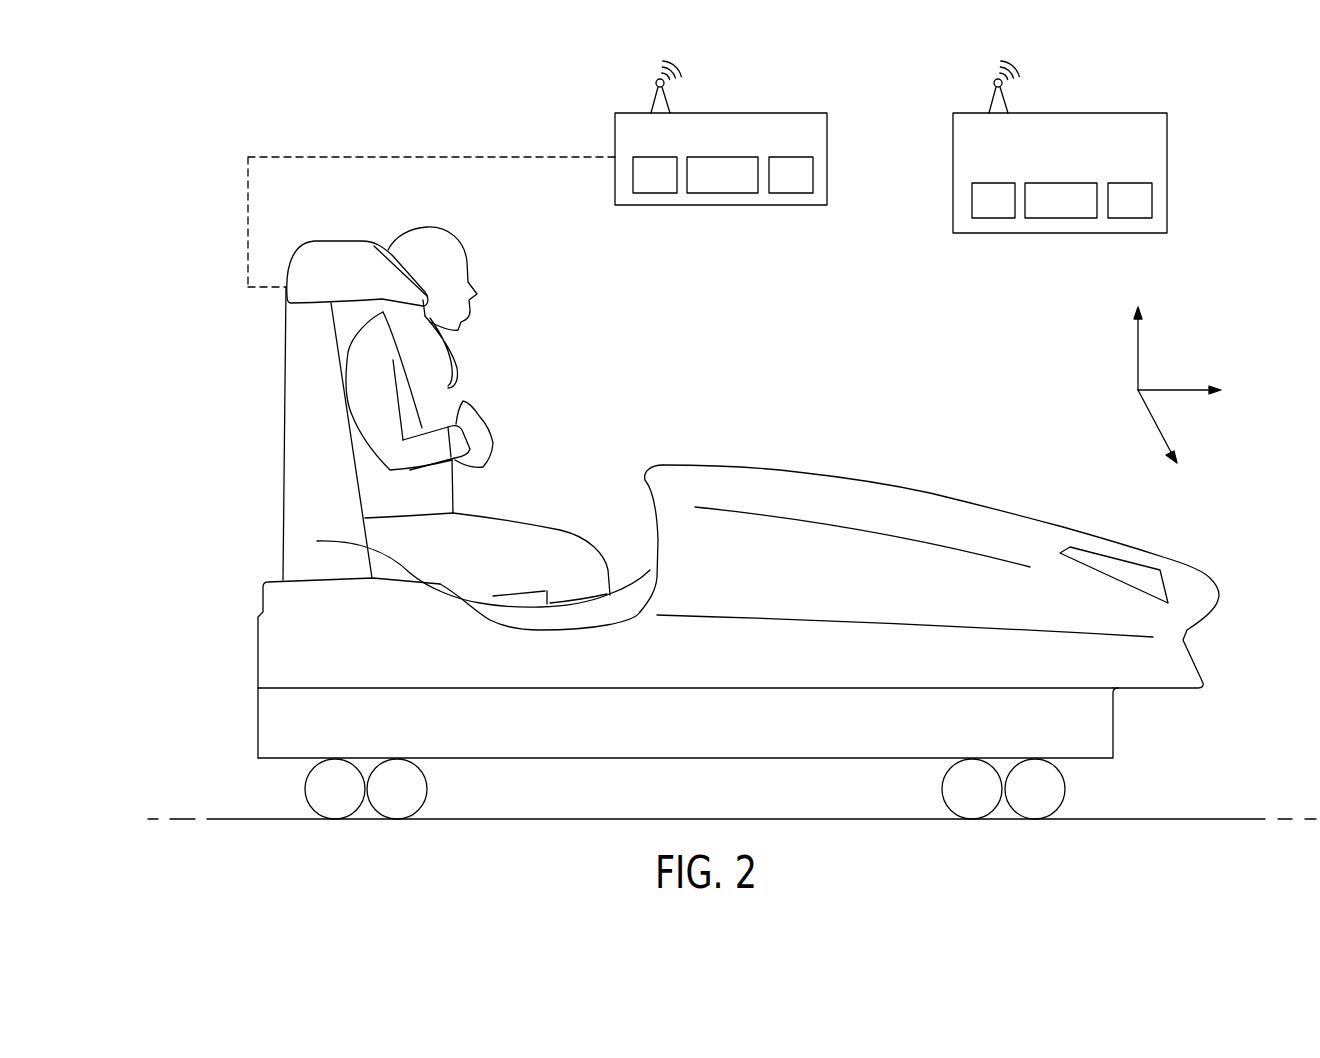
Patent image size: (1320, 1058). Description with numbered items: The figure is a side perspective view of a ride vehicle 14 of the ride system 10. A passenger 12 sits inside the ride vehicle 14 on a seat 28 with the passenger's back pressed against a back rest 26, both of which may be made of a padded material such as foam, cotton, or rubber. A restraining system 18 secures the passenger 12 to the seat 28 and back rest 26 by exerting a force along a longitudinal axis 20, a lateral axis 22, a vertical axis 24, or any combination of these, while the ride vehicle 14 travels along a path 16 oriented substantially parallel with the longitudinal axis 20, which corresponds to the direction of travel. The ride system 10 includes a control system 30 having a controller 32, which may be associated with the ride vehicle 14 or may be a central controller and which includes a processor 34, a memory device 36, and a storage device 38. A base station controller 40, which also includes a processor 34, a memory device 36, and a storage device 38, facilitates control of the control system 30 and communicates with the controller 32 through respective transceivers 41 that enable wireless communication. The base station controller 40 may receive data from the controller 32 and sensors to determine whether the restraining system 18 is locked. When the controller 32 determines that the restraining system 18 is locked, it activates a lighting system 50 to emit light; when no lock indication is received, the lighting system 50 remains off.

The ride system 10 is at (883, 371).
The passenger 12 is at (427, 228).
The ride vehicle 14 is at (1252, 576).
The path 16 is at (1219, 823).
The restraining system 18 is at (355, 228).
The longitudinal axis 20 is at (1173, 388).
The lateral axis 22 is at (1153, 425).
The vertical axis 24 is at (1138, 348).
The back rest 26 is at (295, 408).
The seat 28 is at (317, 541).
The control system 30 is at (871, 146).
The controller 32 is at (722, 113).
The processor 34 is at (657, 193).
The memory device 36 is at (723, 193).
The storage device 38 is at (792, 193).
The base station controller 40 is at (1060, 113).
The transceiver 41 is at (657, 112).
The lighting system 50 is at (407, 267).